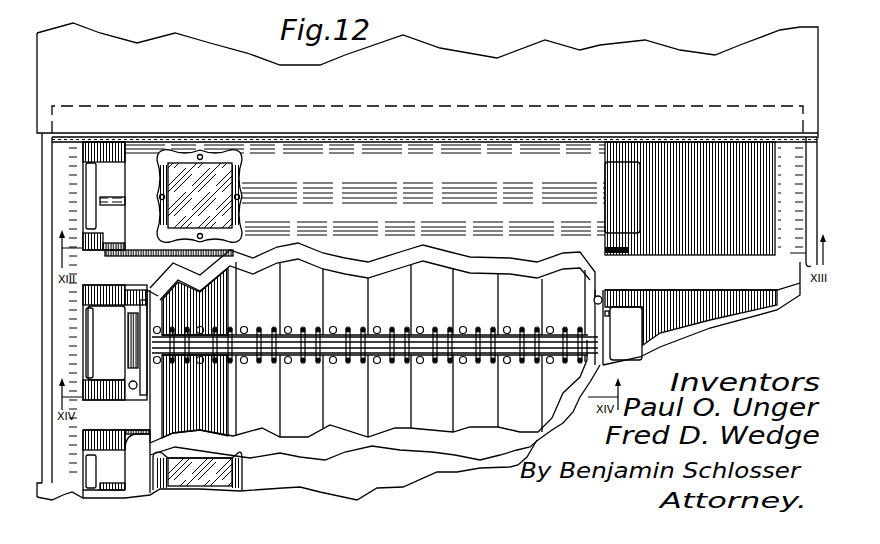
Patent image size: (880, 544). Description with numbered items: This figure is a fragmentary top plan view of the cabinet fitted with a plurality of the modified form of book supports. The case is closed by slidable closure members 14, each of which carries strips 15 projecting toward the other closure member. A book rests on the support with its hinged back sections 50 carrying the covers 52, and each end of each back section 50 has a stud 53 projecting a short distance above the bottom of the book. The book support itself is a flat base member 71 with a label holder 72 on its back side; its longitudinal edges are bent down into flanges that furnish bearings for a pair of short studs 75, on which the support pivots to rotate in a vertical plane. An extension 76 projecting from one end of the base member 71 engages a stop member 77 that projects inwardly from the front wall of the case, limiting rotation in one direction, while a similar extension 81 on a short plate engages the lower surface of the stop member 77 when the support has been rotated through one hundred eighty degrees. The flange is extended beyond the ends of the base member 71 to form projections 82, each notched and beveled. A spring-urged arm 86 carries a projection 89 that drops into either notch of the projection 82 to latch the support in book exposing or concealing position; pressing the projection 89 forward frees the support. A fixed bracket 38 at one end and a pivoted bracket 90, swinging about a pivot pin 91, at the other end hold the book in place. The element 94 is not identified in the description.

The slidable closure member 14 is at (681, 57).
The strip 15 is at (45, 436).
The fixed bracket 38 is at (600, 358).
The back section 50 is at (140, 318).
The cover 52 is at (600, 278).
The stud 53 is at (135, 306).
The base member 71 is at (428, 162).
The label holder 72 is at (218, 157).
The stud 75 is at (372, 141).
The extension 76 is at (98, 337).
The stop member 77 is at (93, 185).
The extension 81 is at (113, 173).
The projection 82 is at (614, 248).
The arm 86 is at (110, 254).
The projection 89 is at (105, 249).
The pivoted bracket 90 is at (130, 338).
The pivot pin 91 is at (131, 383).
The link 94 is at (153, 293).